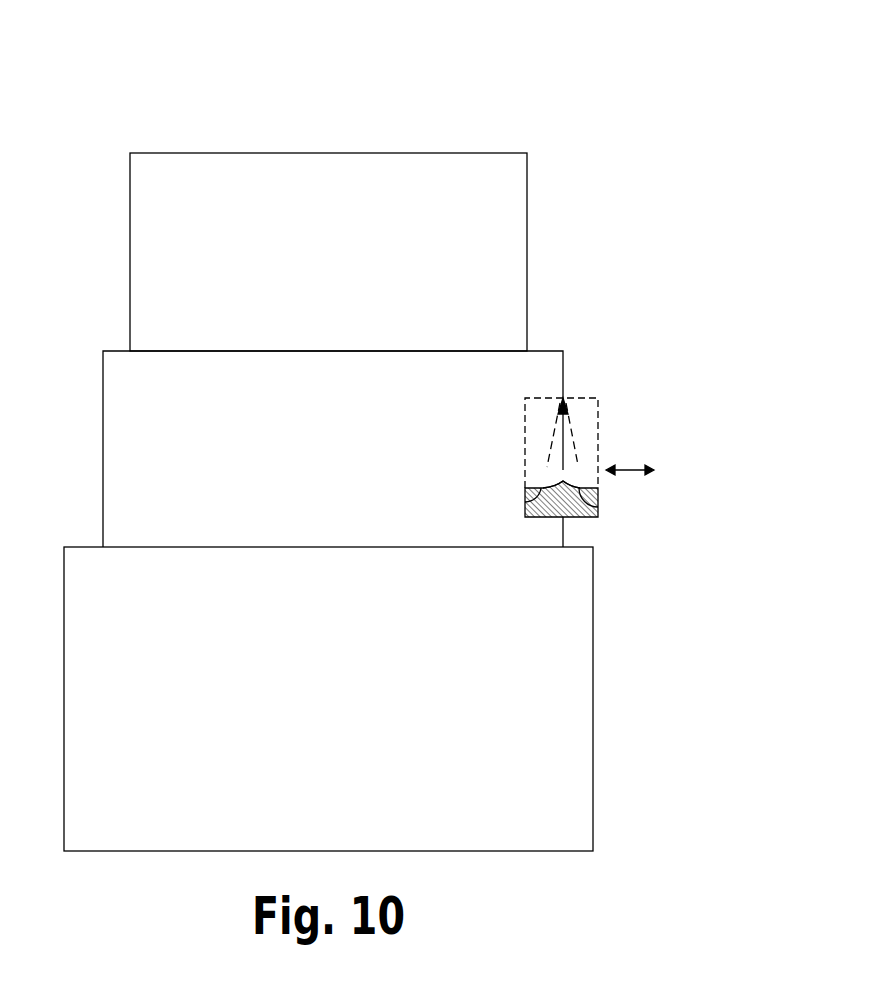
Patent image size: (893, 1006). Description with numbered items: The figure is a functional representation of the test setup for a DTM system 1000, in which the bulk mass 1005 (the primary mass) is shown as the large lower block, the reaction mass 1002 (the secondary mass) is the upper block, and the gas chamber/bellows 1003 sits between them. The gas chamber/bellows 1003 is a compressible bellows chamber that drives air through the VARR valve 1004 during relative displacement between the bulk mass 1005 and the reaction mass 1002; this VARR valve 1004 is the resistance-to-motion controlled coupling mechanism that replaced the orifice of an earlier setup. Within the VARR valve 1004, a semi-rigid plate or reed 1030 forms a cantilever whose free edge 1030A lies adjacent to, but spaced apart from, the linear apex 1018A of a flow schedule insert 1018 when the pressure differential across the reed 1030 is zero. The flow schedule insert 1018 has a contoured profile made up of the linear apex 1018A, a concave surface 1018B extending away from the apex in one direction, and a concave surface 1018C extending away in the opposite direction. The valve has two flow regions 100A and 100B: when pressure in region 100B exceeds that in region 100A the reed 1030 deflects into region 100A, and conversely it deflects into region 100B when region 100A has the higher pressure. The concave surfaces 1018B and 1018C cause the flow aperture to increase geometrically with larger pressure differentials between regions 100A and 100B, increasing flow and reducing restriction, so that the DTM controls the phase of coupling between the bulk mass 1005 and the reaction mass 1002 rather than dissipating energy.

The DTM system 1000 is at (447, 49).
The reaction mass 1002 is at (440, 177).
The gas chamber/bellows 1003 is at (184, 412).
The VARR valve 1004 is at (598, 420).
The bulk mass 1005 is at (583, 718).
The reed 1030 is at (552, 442).
The free edge 1030A is at (578, 465).
The flow region 100A is at (758, 458).
The flow region 100B is at (343, 481).
The flow schedule insert 1018 is at (536, 505).
The linear apex 1018A is at (563, 482).
The concave surface 1018B is at (583, 500).
The concave surface 1018C is at (527, 497).